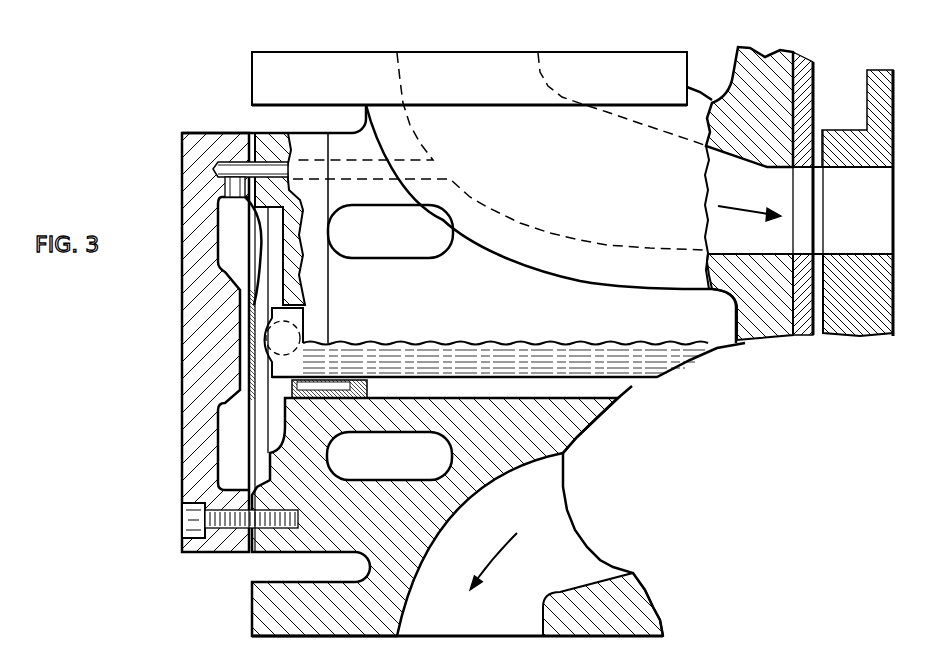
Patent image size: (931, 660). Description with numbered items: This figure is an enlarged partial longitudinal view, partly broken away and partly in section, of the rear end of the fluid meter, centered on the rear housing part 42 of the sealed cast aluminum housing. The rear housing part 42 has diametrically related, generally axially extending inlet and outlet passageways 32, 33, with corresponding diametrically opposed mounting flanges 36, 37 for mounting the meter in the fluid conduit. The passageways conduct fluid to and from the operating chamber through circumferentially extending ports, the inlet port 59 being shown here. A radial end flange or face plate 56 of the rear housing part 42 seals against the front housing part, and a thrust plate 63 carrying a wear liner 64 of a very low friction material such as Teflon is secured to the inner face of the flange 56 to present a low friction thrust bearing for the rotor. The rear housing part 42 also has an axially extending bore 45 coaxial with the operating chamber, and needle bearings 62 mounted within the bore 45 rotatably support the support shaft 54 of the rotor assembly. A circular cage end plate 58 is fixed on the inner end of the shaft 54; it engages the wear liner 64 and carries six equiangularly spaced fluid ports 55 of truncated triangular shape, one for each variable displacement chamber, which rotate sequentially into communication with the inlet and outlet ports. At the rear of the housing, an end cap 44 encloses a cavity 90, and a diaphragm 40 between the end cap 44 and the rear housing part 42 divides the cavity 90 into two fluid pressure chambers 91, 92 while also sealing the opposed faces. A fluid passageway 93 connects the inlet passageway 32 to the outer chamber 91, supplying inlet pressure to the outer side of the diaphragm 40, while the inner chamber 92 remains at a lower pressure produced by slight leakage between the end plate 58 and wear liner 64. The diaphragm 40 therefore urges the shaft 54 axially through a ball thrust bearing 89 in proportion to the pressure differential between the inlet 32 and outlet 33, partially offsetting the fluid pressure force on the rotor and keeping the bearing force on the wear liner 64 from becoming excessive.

The inlet passageway 32 is at (744, 198).
The outlet passageway 33 is at (545, 519).
The mounting flange 36 is at (630, 33).
The mounting flange 37 is at (258, 612).
The diaphragm 40 is at (253, 249).
The rear housing part 42 is at (737, 56).
The end cap 44 is at (187, 349).
The bore 45 is at (617, 395).
The support shaft 54 is at (517, 323).
The fluid port 55 is at (872, 226).
The radial end flange 56 is at (767, 62).
The cage end plate 58 is at (863, 322).
The inlet port 59 is at (787, 252).
The needle bearing 62 is at (348, 382).
The thrust plate 63 is at (809, 61).
The wear liner 64 is at (822, 130).
The ball thrust bearing 89 is at (300, 325).
The cavity 90 is at (231, 259).
The fluid pressure chamber 91 is at (222, 214).
The fluid pressure chamber 92 is at (282, 232).
The fluid passageway 93 is at (232, 168).